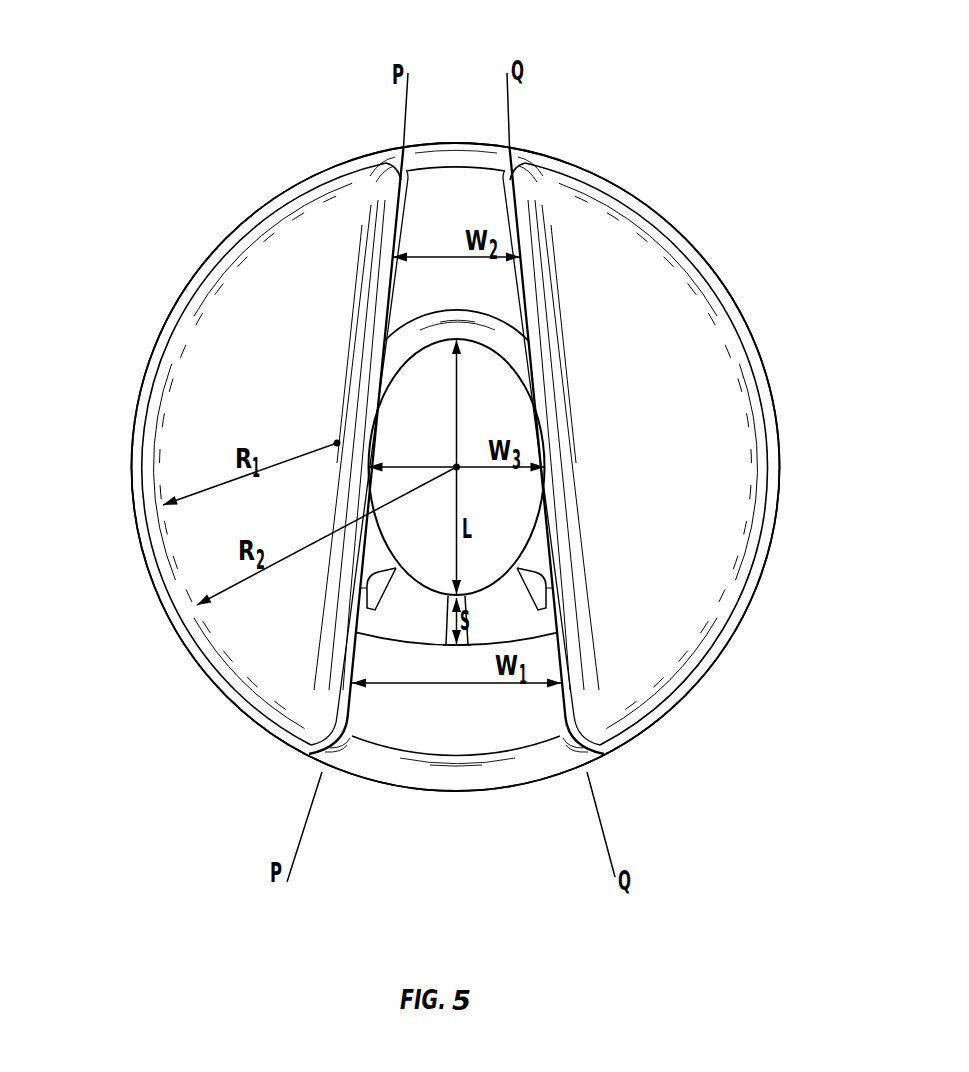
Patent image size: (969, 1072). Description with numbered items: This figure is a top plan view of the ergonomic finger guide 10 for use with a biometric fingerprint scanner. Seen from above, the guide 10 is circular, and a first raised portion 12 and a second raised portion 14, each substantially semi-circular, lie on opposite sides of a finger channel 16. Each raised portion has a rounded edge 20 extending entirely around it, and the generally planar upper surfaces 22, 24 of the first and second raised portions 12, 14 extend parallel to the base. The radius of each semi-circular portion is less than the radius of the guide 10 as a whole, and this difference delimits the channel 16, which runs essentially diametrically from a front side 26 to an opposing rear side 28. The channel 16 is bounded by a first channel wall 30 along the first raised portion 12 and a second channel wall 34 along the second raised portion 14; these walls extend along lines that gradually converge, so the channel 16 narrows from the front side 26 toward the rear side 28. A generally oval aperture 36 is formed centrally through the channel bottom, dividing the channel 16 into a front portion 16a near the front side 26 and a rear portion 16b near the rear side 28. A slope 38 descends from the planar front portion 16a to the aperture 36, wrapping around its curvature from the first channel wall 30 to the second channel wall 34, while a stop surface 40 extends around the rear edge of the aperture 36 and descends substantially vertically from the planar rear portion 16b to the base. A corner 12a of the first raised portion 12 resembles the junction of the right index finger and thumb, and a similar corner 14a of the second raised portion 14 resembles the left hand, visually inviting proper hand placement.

The finger guide 10 is at (163, 128).
The first raised portion 12 is at (220, 357).
The corner of the first raised portion 12a is at (340, 742).
The second raised portion 14 is at (667, 343).
The corner of the second raised portion 14a is at (573, 743).
The finger channel 16 is at (451, 794).
The front portion of the channel 16a is at (456, 729).
The rear portion of the channel 16b is at (455, 185).
The rounded edge 20 is at (768, 420).
The upper surface of the first raised portion 22 is at (293, 287).
The upper surface of the second raised portion 24 is at (681, 539).
The front side 26 is at (665, 717).
The rear side 28 is at (580, 165).
The first channel wall 30 is at (397, 232).
The second channel wall 34 is at (562, 622).
The aperture 36 is at (419, 425).
The slope 38 is at (407, 610).
The stop surface 40 is at (484, 312).